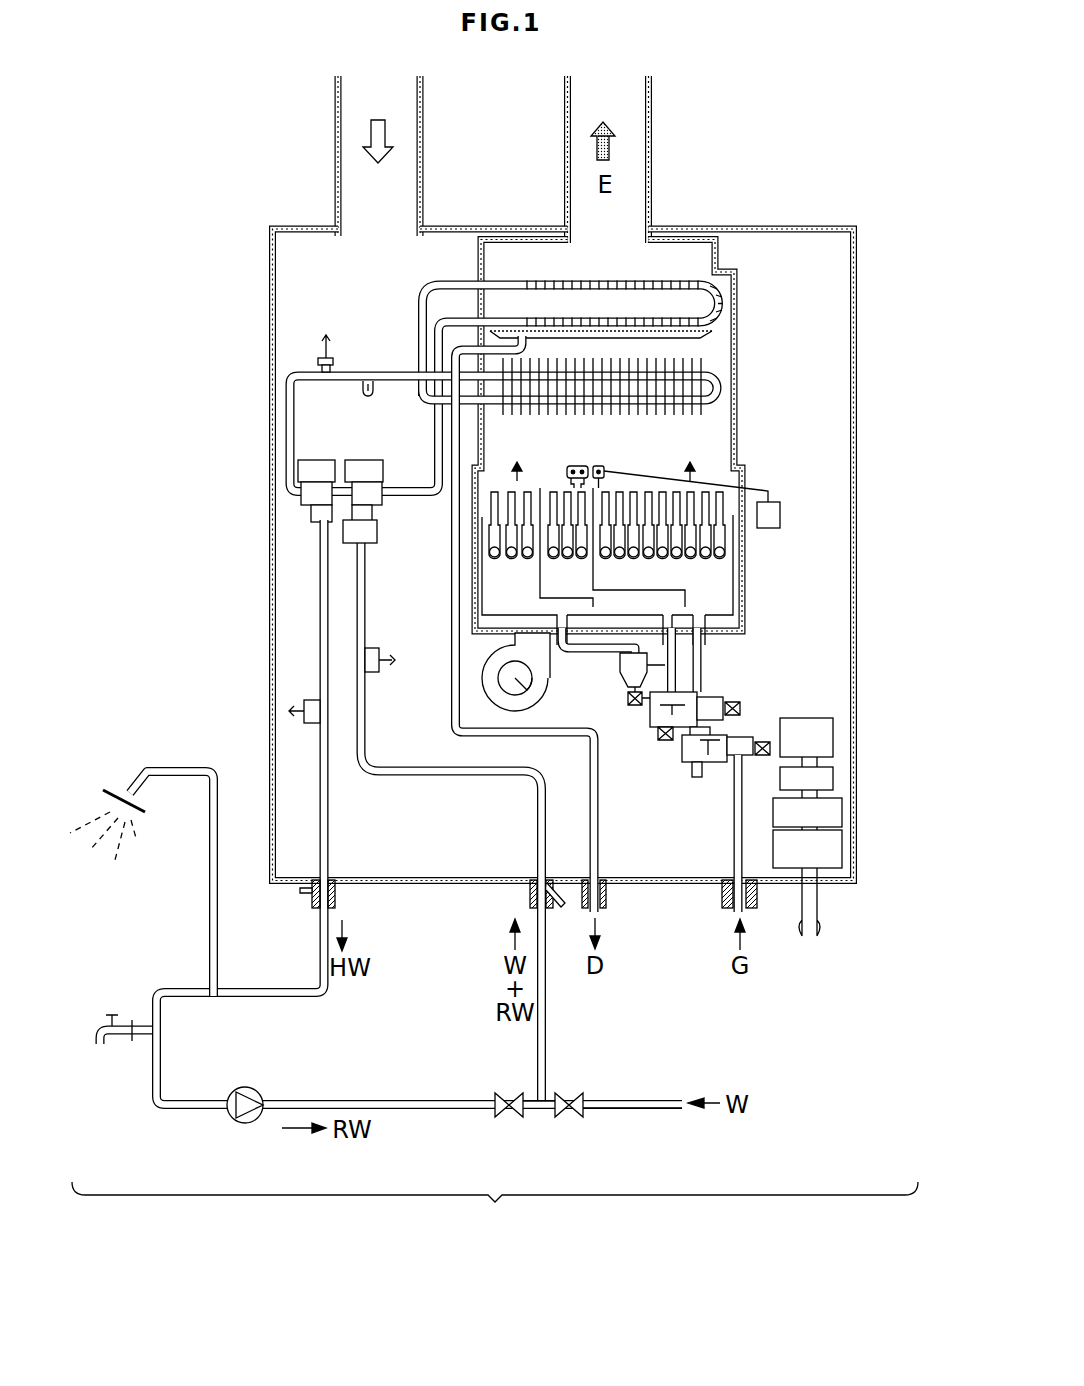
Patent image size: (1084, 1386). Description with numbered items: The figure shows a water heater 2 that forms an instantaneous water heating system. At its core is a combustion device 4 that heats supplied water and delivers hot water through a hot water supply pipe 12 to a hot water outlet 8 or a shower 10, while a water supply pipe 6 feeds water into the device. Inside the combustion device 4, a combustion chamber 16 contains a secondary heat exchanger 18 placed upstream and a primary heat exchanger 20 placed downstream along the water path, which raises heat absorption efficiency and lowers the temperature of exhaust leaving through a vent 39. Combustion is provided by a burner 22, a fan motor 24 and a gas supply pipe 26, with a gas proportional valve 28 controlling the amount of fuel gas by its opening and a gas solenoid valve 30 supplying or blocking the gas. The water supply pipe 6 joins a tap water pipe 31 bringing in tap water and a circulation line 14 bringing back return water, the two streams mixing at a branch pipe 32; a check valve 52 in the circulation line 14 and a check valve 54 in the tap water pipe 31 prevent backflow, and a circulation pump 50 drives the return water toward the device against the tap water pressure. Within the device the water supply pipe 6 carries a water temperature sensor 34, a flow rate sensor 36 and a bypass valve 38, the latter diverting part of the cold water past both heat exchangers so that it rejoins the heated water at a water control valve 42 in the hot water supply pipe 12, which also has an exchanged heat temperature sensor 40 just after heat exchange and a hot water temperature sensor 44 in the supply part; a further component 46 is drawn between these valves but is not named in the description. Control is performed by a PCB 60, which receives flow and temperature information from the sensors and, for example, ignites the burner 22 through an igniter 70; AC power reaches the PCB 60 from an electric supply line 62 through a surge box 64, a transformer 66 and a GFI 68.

The water heater 2 is at (495, 1209).
The combustion device 4 is at (857, 254).
The water supply pipe 6 is at (546, 1030).
The hot water outlet 8 is at (100, 1028).
The shower 10 is at (126, 796).
The hot water supply pipe 12 is at (330, 830).
The circulation line 14 is at (415, 1108).
The combustion chamber 16 is at (738, 318).
The secondary heat exchanger 18 is at (713, 290).
The primary heat exchanger 20 is at (720, 383).
The burner 22 is at (727, 543).
The fan motor 24 is at (530, 690).
The gas supply pipe 26 is at (733, 832).
The gas proportional valve 28 is at (690, 752).
The gas solenoid valve 30 is at (724, 697).
The tap water pipe 31 is at (655, 1108).
The branch pipe 32 is at (535, 1110).
The water temperature sensor 34 is at (378, 649).
The flow rate sensor 36 is at (378, 532).
The bypass valve 38 is at (362, 462).
The vent 39 is at (651, 160).
The exchanged heat temperature sensor 40 is at (318, 361).
The water control valve 42 is at (298, 466).
The hot water temperature sensor 44 is at (306, 700).
The bypass pipe 46 is at (340, 487).
The circulation pump 50 is at (245, 1124).
The check valve 52 is at (500, 1092).
The check valve 54 is at (575, 1112).
The PCB 60 is at (806, 718).
The electric supply line 62 is at (820, 937).
The surge box 64 is at (843, 848).
The transformer 66 is at (843, 812).
The GFI 68 is at (834, 779).
The igniter 70 is at (780, 516).